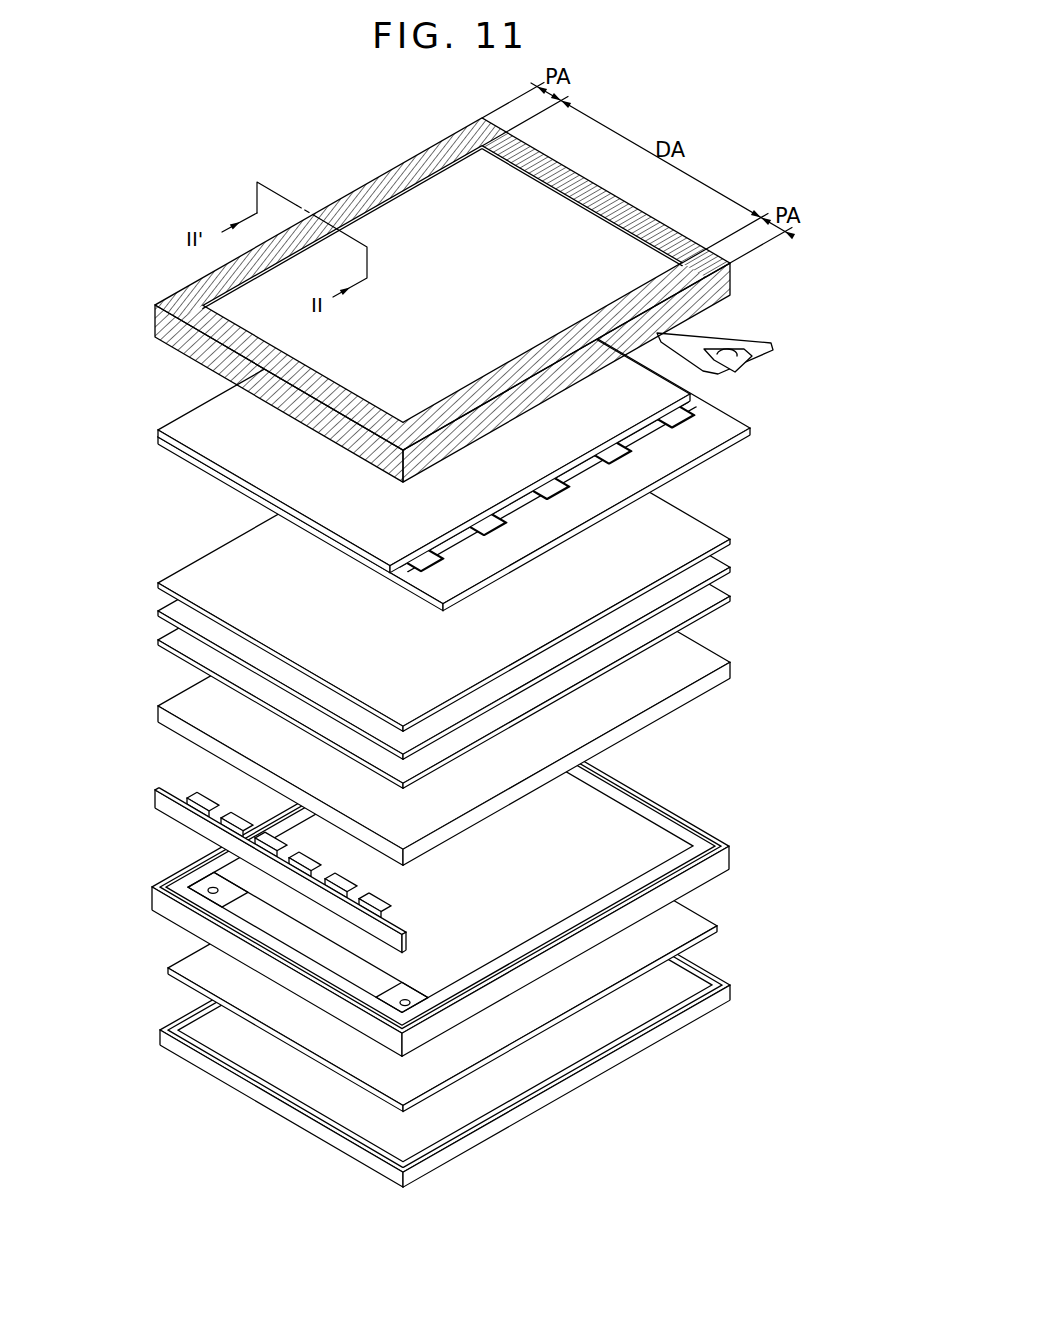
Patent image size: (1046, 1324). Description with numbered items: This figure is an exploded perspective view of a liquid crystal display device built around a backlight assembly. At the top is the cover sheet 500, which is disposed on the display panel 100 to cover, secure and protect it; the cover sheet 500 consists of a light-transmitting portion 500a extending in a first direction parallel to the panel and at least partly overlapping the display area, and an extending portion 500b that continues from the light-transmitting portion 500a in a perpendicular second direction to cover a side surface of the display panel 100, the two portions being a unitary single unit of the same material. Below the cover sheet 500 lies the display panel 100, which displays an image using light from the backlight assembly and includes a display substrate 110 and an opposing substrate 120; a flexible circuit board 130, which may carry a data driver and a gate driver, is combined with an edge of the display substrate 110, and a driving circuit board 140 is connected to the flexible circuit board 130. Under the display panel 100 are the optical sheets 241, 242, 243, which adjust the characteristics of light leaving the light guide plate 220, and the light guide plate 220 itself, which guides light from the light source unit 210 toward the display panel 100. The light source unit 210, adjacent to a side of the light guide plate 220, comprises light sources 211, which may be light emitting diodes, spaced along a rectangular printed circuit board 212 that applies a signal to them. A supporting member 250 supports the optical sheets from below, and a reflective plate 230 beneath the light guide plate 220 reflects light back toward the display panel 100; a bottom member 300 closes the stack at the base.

The cover sheet 500 is at (372, 300).
The light-transmitting portion 500a is at (210, 273).
The extending portion 500b is at (157, 340).
The display panel 100 is at (389, 434).
The opposing substrate 120 is at (177, 425).
The display substrate 110 is at (167, 447).
The flexible circuit board 130 is at (752, 358).
The driving circuit board 140 is at (772, 344).
The optical sheet 241 is at (158, 583).
The optical sheet 242 is at (158, 611).
The optical sheet 243 is at (158, 640).
The light guide plate 220 is at (158, 707).
The light source unit 210 is at (217, 860).
The light source 211 is at (185, 797).
The printed circuit board 212 is at (172, 812).
The supporting member 250 is at (153, 889).
The reflective plate 230 is at (166, 968).
The bottom chassis 300 is at (160, 1031).